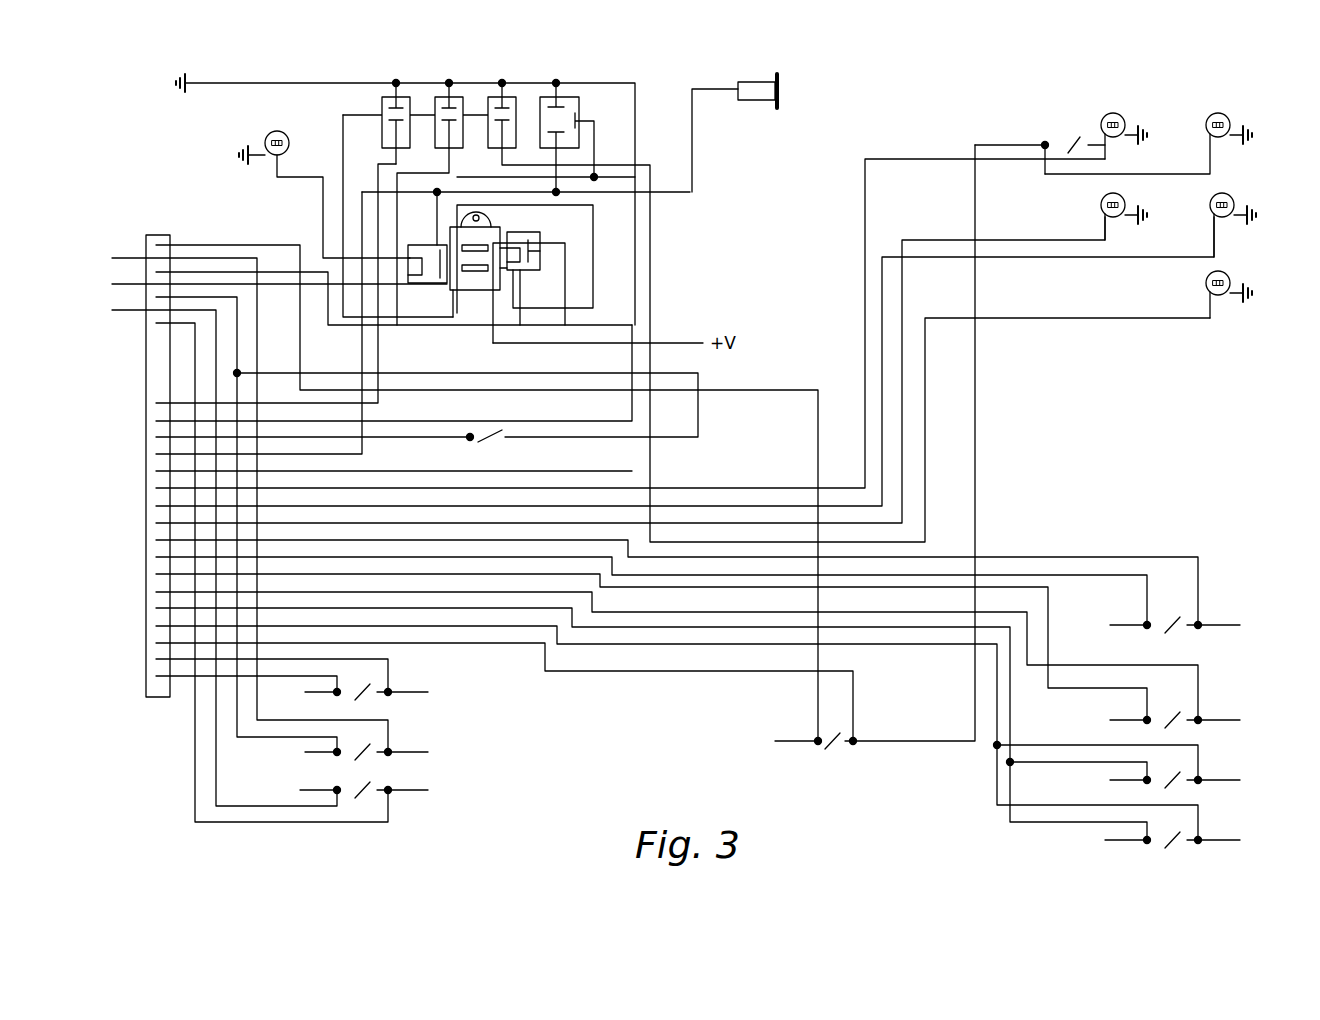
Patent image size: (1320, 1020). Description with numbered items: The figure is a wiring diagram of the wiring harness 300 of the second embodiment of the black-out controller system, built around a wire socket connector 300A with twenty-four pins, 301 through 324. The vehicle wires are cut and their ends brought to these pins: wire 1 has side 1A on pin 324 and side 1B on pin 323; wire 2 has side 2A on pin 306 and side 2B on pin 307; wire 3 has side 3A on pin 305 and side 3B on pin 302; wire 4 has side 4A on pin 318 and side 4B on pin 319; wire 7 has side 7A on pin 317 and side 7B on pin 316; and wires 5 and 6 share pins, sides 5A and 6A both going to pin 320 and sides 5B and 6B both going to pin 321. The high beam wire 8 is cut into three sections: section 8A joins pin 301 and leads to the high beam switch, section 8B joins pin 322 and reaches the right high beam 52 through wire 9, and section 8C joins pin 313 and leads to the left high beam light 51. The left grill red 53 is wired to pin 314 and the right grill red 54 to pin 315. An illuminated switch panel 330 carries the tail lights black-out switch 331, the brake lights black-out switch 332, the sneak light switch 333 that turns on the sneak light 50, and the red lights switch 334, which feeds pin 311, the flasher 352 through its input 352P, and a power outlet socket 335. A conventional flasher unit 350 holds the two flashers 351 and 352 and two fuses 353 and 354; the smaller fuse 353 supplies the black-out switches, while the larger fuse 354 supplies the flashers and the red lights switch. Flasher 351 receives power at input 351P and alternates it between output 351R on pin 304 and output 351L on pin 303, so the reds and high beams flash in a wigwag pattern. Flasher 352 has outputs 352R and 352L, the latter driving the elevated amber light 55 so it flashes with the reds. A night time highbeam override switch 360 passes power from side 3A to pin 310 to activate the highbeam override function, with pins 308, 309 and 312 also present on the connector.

The wiring harness 300 is at (1190, 398).
The wire socket connector 300A is at (160, 235).
The pin 301 is at (467, 489).
The pin 302 is at (234, 501).
The pin 303 is at (374, 294).
The pin 304 is at (264, 284).
The pin 305 is at (226, 520).
The pin 306 is at (209, 554).
The pin 307 is at (252, 568).
The pin 308 is at (256, 287).
The pin 309 is at (374, 377).
The pin 310 is at (407, 409).
The pin 311 is at (239, 327).
The pin 312 is at (374, 471).
The pin 313 is at (610, 327).
The pin 314 is at (665, 365).
The pin 315 is at (610, 374).
The pin 316 is at (657, 578).
The pin 317 is at (631, 587).
The pin 318 is at (631, 643).
The pin 319 is at (657, 652).
The pin 320 is at (631, 720).
The pin 321 is at (657, 729).
The pin 322 is at (484, 688).
The pin 323 is at (252, 671).
The pin 324 is at (226, 680).
The illuminated switch panel 330 is at (693, 298).
The tail lights black-out switch 331 is at (412, 97).
The brake lights black-out switch 332 is at (465, 97).
The sneak light switch 333 is at (518, 97).
The red lights switch 334 is at (575, 97).
The power outlet socket 335 is at (730, 100).
The conventional flasher unit 350 is at (516, 229).
The flasher 351 is at (546, 278).
The output 351R is at (540, 240).
The output 351L is at (522, 265).
The input 351P is at (514, 300).
The flasher 352 is at (397, 235).
The output 352R is at (440, 245).
The output 352L is at (424, 278).
The input 352P is at (436, 248).
The fuse 353 is at (478, 278).
The fuse 354 is at (485, 230).
The night time highbeam override switch 360 is at (460, 433).
The elevated amber light 55 is at (277, 131).
The left side high beam light 51 is at (1108, 114).
The right side high beam 52 is at (1215, 112).
The left side grill red 53 is at (1115, 194).
The right side grill red 54 is at (1220, 194).
The sneak light 50 is at (1228, 272).
The section of wire 8 8C is at (1103, 143).
The wire 9 is at (1210, 163).
The wire 1 is at (294, 692).
The side of wire 1 1A is at (306, 692).
The side of wire 1 1B is at (416, 692).
The wire 2 is at (294, 790).
The side of wire 2 2A is at (316, 790).
The side of wire 2 2B is at (398, 791).
The wire 3 is at (294, 752).
The side of wire 3 3A is at (306, 752).
The side of wire 3 3B is at (413, 752).
The wire 4 is at (1096, 720).
The side of wire 4 4A is at (1123, 722).
The side of wire 4 4B is at (1222, 721).
The wire 5 is at (1096, 780).
The side of wire 5 5A is at (1122, 781).
The side of wire 5 5B is at (1220, 781).
The wire 6 is at (1092, 843).
The side of wire 6 6A is at (1115, 840).
The side of wire 6 6B is at (1222, 841).
The wire 7 is at (1096, 625).
The side of wire 7 7A is at (1122, 628).
The side of wire 7 7B is at (1215, 626).
The wire 8 is at (748, 741).
The section of wire 8 8A is at (788, 742).
The section of wire 8 8B is at (885, 741).